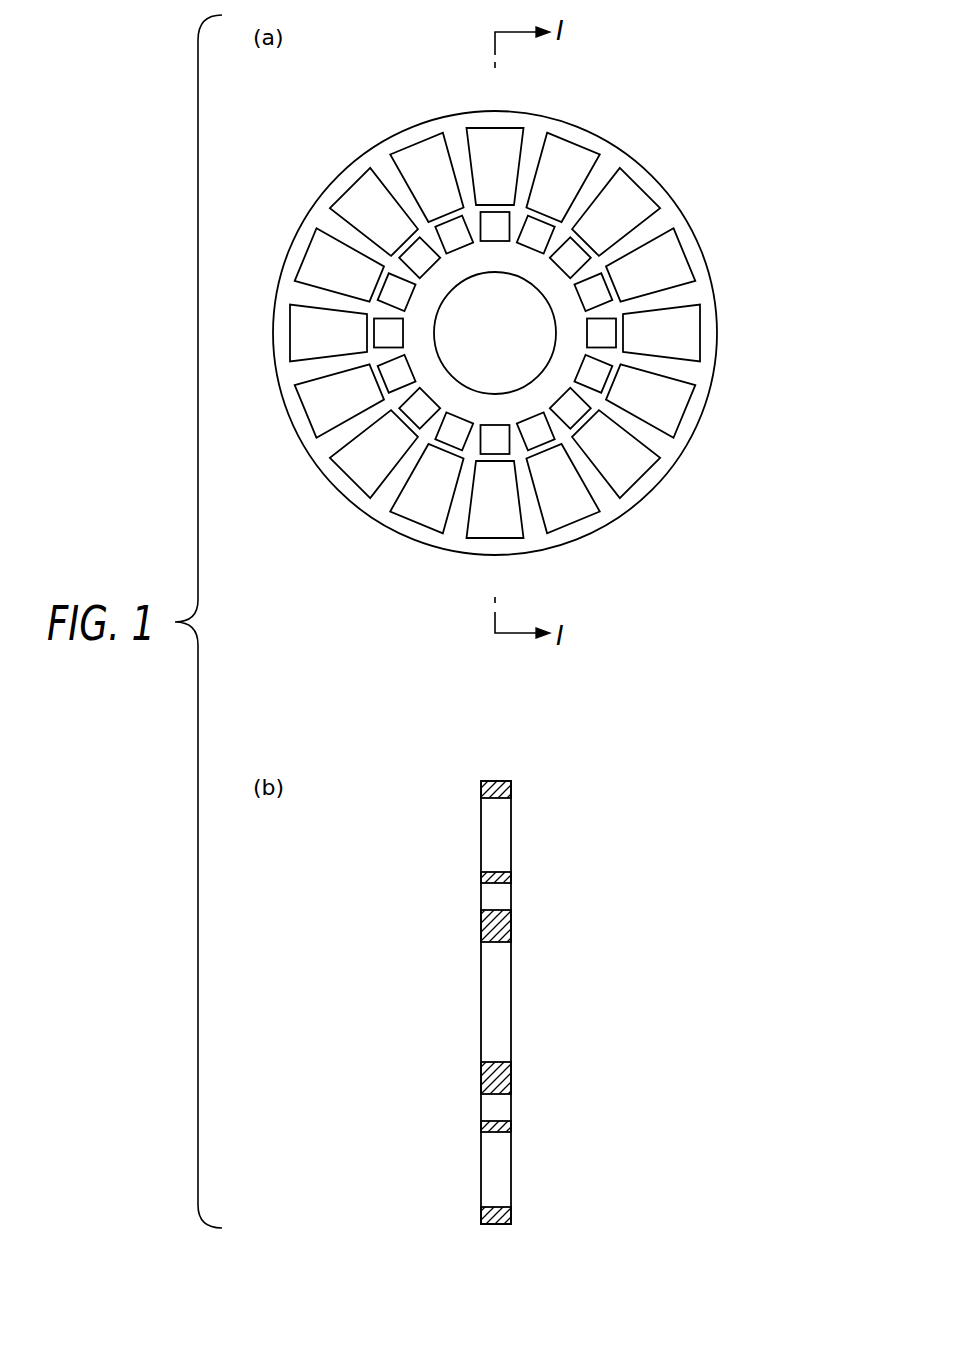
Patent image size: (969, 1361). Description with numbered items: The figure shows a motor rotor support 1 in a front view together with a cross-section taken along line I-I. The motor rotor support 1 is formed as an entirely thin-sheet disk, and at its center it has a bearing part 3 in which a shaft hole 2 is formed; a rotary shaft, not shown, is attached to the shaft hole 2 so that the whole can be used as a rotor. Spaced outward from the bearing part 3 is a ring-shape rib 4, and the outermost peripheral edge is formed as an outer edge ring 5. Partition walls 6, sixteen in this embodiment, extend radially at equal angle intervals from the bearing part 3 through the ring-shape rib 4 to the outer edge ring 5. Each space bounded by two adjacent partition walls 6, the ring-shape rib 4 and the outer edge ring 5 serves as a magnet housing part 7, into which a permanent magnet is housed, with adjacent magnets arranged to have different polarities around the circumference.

The motor rotor support 1 is at (688, 541).
The shaft hole 2 is at (475, 362).
The bearing part 3 is at (513, 262).
The ring-shape rib 4 is at (585, 245).
The outer edge ring 5 is at (697, 252).
The partition wall 6 is at (645, 432).
The magnet housing part 7 is at (430, 170).